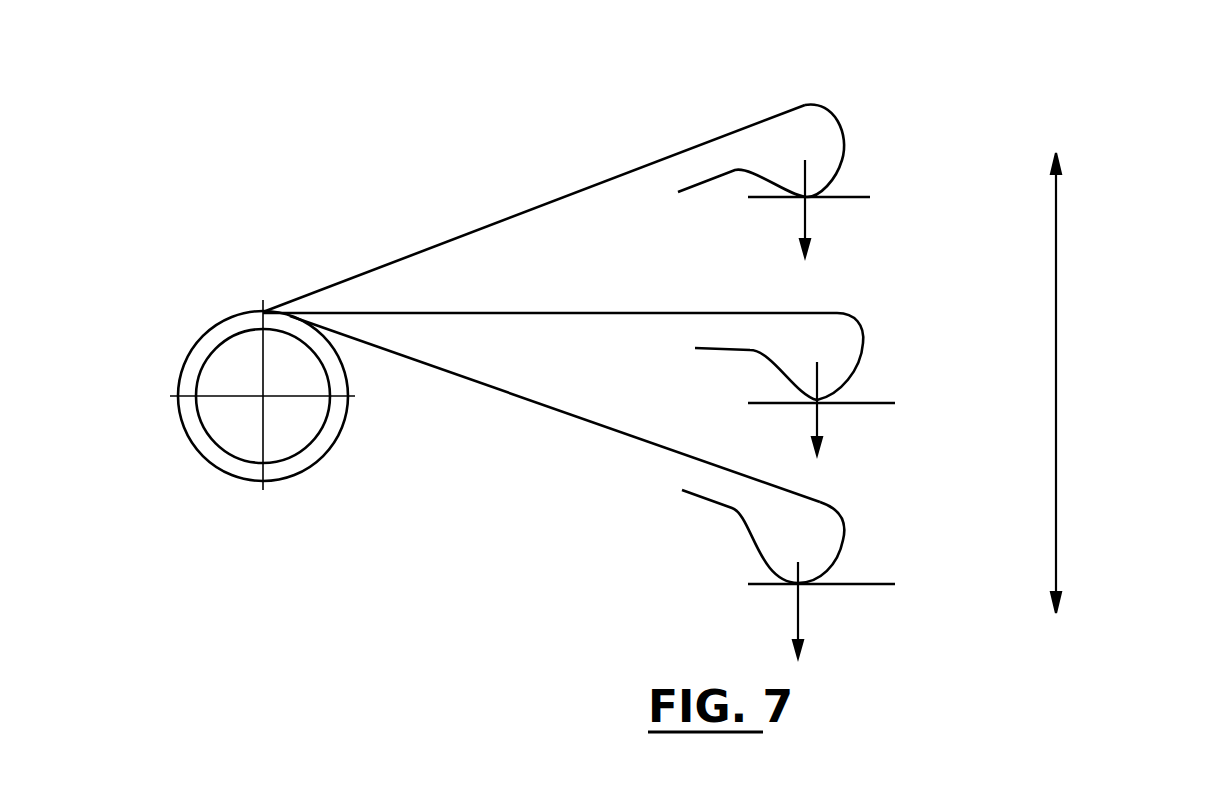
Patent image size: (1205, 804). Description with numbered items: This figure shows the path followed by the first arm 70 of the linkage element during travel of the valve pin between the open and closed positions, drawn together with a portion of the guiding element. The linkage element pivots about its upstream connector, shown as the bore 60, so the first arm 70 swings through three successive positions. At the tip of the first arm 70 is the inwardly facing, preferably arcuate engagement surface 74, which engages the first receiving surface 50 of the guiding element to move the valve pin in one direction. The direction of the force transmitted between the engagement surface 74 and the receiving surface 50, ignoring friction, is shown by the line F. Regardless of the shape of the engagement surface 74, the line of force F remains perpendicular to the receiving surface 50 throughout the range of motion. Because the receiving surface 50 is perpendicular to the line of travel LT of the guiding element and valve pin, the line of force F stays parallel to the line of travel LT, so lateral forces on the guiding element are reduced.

The bore 60 is at (220, 340).
The first arm 70 is at (692, 147).
The engagement surface 74 is at (843, 158).
The first receiving surface 50 is at (853, 197).
The line of force F is at (808, 217).
The line of travel LT is at (1056, 272).